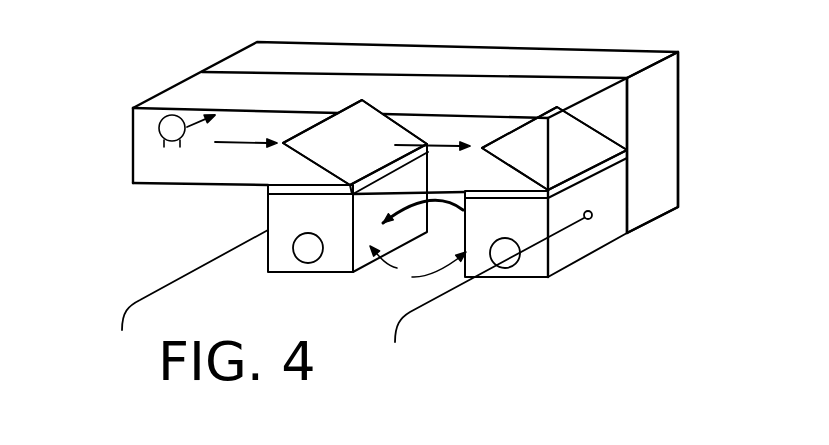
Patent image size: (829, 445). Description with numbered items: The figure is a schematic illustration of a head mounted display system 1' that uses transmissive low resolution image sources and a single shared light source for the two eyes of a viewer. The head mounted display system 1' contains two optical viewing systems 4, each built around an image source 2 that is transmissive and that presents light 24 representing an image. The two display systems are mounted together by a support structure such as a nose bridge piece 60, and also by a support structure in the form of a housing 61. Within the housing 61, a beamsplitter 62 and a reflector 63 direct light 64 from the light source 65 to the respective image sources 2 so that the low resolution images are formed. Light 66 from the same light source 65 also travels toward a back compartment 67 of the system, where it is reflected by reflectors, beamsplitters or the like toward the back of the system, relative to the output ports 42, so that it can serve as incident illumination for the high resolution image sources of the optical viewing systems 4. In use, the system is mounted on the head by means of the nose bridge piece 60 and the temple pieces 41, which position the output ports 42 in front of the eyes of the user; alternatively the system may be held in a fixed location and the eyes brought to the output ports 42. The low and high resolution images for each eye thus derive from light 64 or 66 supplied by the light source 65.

The head mounted display system 1' is at (362, 159).
The image source 2 is at (293, 173).
The optical viewing system 4 is at (418, 265).
The light 24 is at (412, 160).
The temple piece 41 is at (187, 272).
The output port 42 is at (303, 263).
The nose bridge piece 60 is at (443, 205).
The housing 61 is at (133, 186).
The beamsplitter 62 is at (312, 127).
The reflector 63 is at (508, 133).
The light 64 is at (243, 144).
The light source 65 is at (158, 125).
The light 66 is at (188, 122).
The back compartment 67 is at (678, 83).